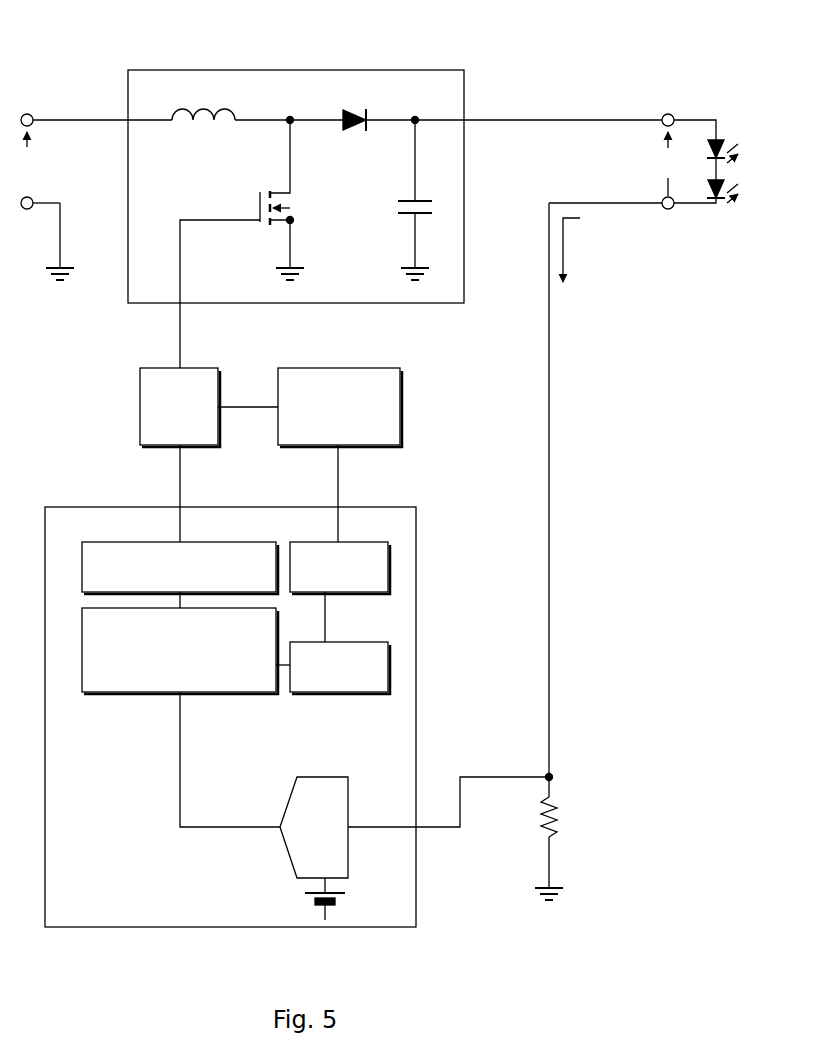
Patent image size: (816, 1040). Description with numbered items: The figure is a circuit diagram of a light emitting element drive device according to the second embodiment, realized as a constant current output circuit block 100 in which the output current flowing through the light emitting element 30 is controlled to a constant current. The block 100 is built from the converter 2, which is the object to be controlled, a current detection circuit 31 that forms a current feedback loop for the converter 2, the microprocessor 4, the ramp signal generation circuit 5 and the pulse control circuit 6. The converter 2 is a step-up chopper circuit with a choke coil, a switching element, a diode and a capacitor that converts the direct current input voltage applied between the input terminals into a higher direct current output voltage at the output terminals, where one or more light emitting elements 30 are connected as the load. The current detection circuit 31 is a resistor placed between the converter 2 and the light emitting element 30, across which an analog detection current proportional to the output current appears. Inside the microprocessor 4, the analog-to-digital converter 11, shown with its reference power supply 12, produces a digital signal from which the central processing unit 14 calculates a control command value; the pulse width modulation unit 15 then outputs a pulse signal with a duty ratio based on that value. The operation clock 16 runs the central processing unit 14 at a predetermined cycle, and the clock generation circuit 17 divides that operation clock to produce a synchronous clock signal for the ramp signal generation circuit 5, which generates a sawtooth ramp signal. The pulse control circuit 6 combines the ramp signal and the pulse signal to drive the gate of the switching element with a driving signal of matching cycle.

The constant current output circuit block 100 is at (588, 54).
The converter 2 is at (428, 70).
The light emitting element 30 is at (748, 165).
The pulse control circuit 6 is at (206, 368).
The ramp signal generation circuit 5 is at (384, 368).
The microprocessor 4 is at (360, 930).
The pulse width modulation unit 15 is at (126, 540).
The central processing unit 14 is at (106, 692).
The clock generation circuit 17 is at (335, 596).
The operation clock 16 is at (335, 696).
The analog-to-digital converter 11 is at (330, 777).
The reference power supply 12 is at (340, 897).
The current detection circuit 31 is at (580, 792).